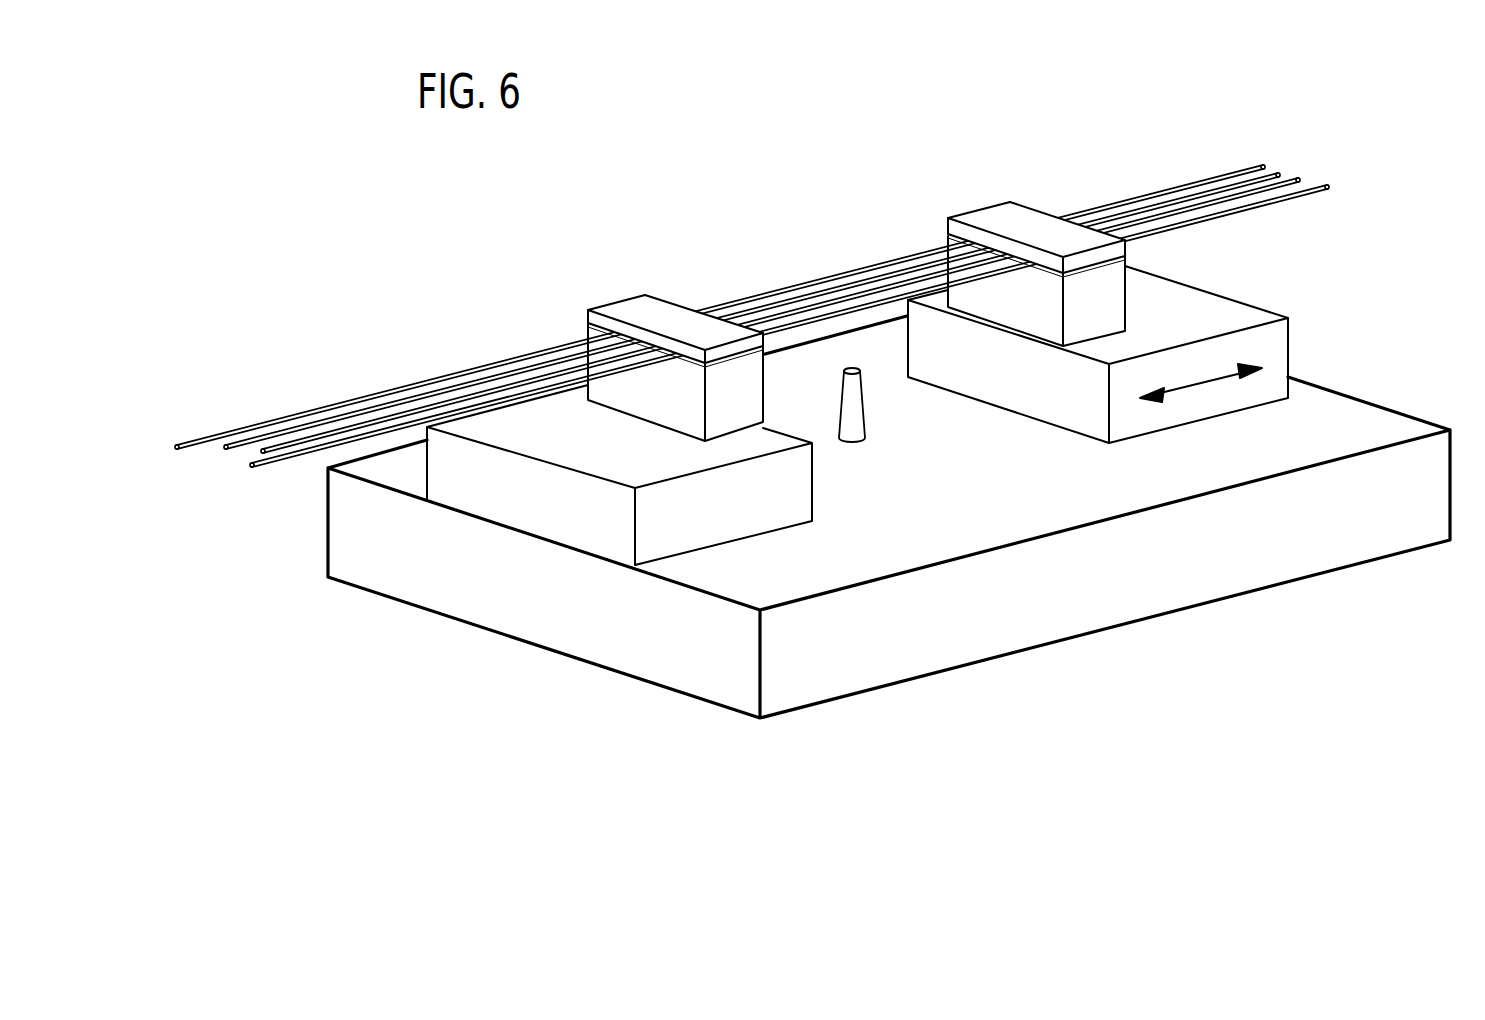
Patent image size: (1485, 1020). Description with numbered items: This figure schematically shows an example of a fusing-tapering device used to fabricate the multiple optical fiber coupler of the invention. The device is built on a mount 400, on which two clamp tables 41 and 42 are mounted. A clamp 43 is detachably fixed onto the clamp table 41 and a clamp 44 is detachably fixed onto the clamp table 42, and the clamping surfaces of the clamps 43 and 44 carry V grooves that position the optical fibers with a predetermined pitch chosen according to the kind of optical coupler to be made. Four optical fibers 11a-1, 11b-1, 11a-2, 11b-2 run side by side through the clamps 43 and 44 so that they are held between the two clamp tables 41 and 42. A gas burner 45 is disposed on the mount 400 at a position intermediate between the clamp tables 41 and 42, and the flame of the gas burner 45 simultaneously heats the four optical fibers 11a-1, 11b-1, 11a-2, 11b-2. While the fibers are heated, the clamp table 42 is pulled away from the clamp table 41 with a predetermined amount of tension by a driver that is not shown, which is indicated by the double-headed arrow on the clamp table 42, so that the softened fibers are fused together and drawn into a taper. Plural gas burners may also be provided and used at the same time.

The mount 400 is at (1032, 625).
The clamp table 41 is at (608, 535).
The clamp table 42 is at (1228, 322).
The clamp 43 is at (660, 318).
The clamp 44 is at (1008, 220).
The gas burner 45 is at (856, 436).
The optical fiber 11a-1 is at (275, 418).
The optical fiber 11a-2 is at (543, 373).
The optical fiber 11b-1 is at (445, 387).
The optical fiber 11b-2 is at (333, 437).